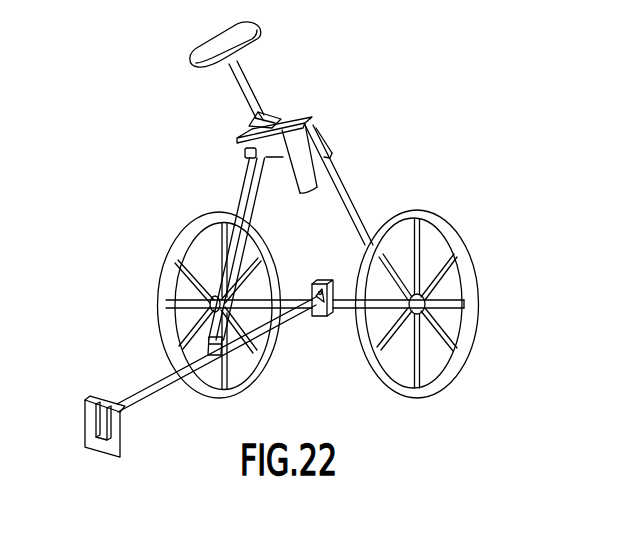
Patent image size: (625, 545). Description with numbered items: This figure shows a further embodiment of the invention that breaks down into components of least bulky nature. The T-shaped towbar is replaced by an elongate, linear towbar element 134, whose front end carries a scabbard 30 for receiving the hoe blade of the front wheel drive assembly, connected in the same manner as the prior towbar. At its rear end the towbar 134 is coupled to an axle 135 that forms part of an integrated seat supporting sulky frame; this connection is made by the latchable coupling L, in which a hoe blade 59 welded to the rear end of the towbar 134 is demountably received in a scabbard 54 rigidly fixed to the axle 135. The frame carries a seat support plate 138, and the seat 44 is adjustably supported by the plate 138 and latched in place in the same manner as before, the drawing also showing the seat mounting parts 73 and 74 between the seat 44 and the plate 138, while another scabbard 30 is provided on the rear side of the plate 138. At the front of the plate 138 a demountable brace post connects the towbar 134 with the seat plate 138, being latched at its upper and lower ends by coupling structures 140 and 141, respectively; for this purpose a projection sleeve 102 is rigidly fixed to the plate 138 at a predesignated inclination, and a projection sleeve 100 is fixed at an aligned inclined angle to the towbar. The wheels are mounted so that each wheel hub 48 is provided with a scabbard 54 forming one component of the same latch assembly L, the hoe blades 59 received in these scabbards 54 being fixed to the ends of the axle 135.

The seat 44 is at (242, 28).
The seat post 73 is at (263, 114).
The seat clamp 74 is at (263, 116).
The seat support plate 138 is at (298, 123).
The scabbard 30 is at (326, 143).
The projection sleeve 102 is at (237, 145).
The coupling structure 140 is at (245, 153).
The projection sleeve 100 is at (197, 388).
The axle 135 is at (293, 290).
The scabbard 54 is at (334, 292).
The latchable coupling L is at (319, 317).
The wheel hub 48 is at (427, 302).
The hoe blade 59 is at (297, 322).
The towbar element 134 is at (216, 371).
The coupling structure 141 is at (206, 347).